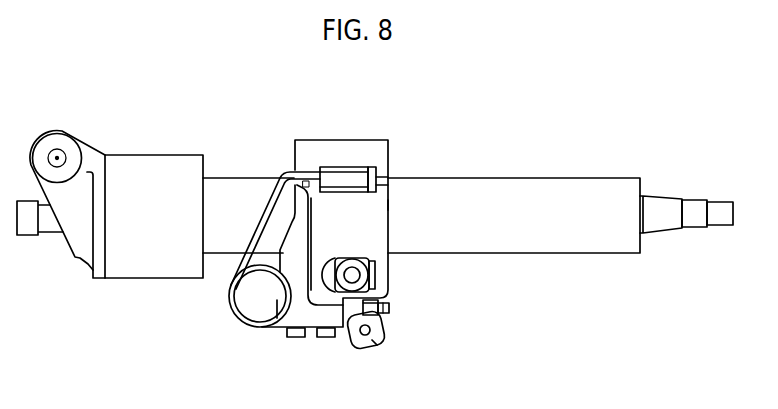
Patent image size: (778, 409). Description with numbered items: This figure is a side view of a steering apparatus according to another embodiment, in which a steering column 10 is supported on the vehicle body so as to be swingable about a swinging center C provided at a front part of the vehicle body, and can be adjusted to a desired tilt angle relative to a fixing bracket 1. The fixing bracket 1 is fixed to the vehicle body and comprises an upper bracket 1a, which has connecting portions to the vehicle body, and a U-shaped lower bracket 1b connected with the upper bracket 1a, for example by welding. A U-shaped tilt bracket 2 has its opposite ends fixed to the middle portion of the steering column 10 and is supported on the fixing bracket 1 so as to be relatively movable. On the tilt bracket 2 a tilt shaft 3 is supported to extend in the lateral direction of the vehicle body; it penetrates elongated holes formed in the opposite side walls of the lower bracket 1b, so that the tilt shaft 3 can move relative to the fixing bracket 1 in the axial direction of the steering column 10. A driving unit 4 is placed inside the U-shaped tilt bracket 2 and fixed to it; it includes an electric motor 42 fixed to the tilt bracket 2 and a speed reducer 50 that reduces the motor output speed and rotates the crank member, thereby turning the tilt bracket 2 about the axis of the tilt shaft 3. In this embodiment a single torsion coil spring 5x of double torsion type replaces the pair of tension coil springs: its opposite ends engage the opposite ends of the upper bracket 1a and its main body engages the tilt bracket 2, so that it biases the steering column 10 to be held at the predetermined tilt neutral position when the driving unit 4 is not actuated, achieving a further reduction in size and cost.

The swinging center C is at (58, 156).
The fixing bracket 1 is at (370, 137).
The upper bracket 1a is at (313, 178).
The lower bracket 1b is at (377, 205).
The tilt bracket 2 is at (295, 317).
The tilt shaft 3 is at (353, 277).
The driving unit 4 is at (398, 310).
The torsion coil spring 5x is at (272, 200).
The steering column 10 is at (551, 176).
The electric motor 42 is at (363, 338).
The speed reducer 50 is at (366, 313).